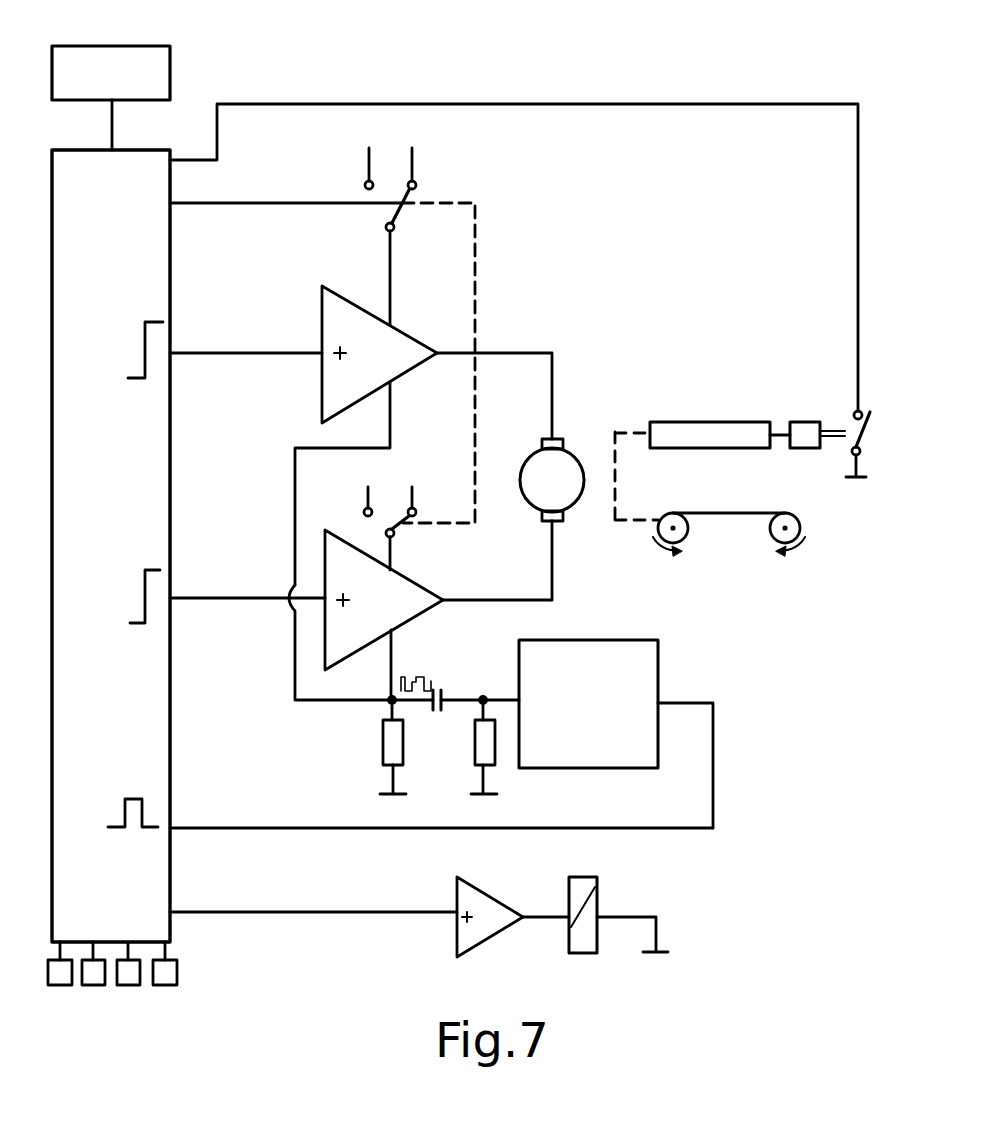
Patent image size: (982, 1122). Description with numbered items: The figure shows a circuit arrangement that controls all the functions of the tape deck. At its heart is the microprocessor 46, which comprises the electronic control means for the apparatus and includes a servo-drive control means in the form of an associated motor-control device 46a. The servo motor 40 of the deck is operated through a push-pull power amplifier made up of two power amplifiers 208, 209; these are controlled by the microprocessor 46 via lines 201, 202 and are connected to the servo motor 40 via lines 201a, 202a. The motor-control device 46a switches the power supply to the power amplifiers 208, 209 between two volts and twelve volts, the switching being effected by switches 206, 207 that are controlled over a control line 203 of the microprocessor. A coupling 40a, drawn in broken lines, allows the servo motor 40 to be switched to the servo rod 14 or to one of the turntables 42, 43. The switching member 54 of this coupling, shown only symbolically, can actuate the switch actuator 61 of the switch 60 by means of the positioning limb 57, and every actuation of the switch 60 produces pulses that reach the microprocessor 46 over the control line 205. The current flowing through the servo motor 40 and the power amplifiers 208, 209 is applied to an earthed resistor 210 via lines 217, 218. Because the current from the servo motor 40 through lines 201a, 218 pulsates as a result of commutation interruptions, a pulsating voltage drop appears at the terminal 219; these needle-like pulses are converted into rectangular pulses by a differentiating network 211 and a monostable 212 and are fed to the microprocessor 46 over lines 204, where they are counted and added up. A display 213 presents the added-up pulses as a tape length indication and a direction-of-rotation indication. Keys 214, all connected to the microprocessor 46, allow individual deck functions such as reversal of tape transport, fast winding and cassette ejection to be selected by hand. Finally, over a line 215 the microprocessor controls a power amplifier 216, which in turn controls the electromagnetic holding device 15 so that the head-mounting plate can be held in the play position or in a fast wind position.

The display 213 is at (108, 58).
The microprocessor 46 is at (160, 278).
The motor-control device 46a is at (569, 347).
The control line 205 is at (192, 160).
The control line 203 is at (275, 183).
The switch 206 is at (405, 200).
The power amplifier 208 is at (398, 345).
The line 202 is at (272, 334).
The line 202a is at (519, 340).
The servo motor 40 is at (577, 470).
The coupling 40a is at (600, 480).
The servo rod 14 is at (699, 432).
The switching member 54 is at (805, 423).
The positioning limb 57 is at (838, 427).
The switch actuator 61 is at (872, 422).
The switch 60 is at (861, 453).
The turntable 43 is at (673, 520).
The turntable 42 is at (787, 520).
The line 201 is at (243, 575).
The line 201a is at (534, 602).
The power amplifier 209 is at (418, 600).
The switch 207 is at (398, 531).
The line 218 is at (397, 647).
The line 217 is at (292, 692).
The terminal 219 is at (390, 697).
The earthed resistor 210 is at (383, 746).
The differentiating network 211 is at (445, 697).
The monostable 212 is at (657, 655).
The lines 204 is at (223, 813).
The line 215 is at (222, 901).
The power amplifier 216 is at (497, 910).
The electromagnetic holding device 15 is at (597, 888).
The keys 214 is at (60, 985).